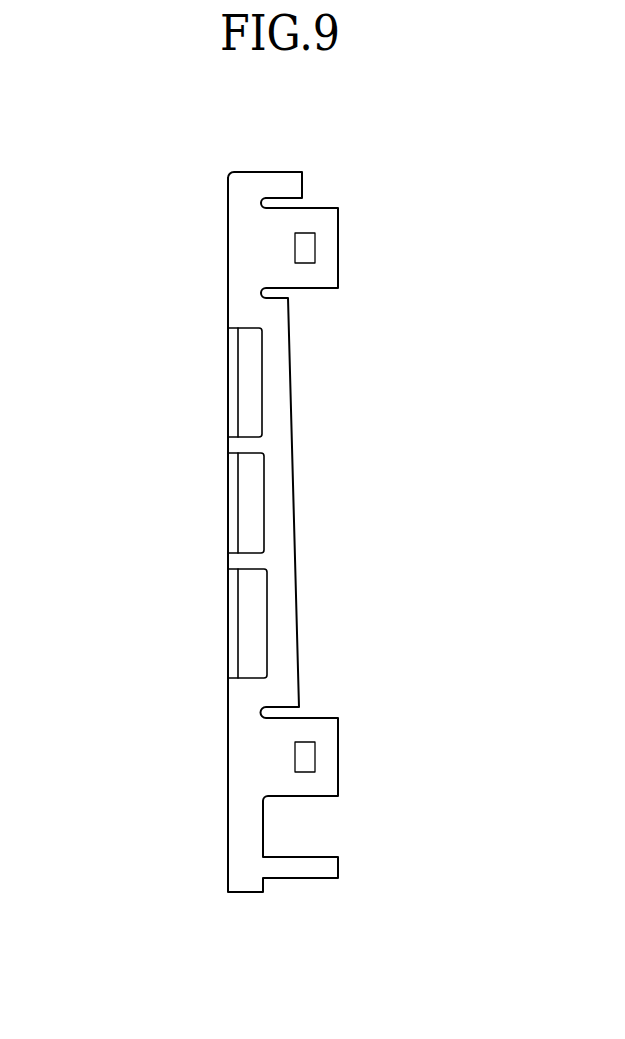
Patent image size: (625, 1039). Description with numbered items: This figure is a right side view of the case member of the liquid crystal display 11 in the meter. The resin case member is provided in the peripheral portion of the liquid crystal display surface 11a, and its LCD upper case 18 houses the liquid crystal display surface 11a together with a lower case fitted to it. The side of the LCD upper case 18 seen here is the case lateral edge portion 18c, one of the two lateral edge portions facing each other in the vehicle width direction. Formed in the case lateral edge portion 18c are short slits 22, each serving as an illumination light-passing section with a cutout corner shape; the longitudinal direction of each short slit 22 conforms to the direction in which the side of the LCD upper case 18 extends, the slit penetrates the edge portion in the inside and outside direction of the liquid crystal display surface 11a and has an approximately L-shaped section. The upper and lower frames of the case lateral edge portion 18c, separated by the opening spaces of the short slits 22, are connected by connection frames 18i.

The liquid crystal display 11 is at (312, 166).
The liquid crystal display surface 11a is at (228, 427).
The LCD upper case 18 is at (250, 180).
The case lateral edge portion 18c is at (218, 672).
The connection frame 18i is at (236, 400).
The short slit 22 is at (219, 363).